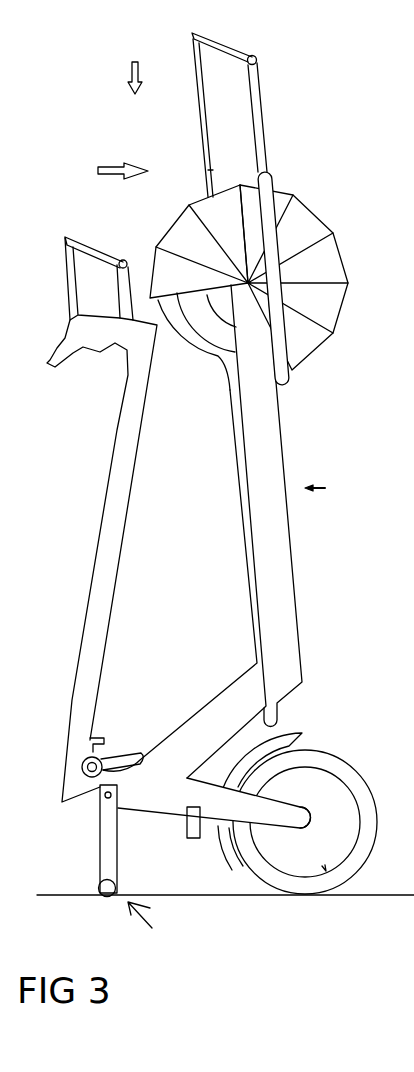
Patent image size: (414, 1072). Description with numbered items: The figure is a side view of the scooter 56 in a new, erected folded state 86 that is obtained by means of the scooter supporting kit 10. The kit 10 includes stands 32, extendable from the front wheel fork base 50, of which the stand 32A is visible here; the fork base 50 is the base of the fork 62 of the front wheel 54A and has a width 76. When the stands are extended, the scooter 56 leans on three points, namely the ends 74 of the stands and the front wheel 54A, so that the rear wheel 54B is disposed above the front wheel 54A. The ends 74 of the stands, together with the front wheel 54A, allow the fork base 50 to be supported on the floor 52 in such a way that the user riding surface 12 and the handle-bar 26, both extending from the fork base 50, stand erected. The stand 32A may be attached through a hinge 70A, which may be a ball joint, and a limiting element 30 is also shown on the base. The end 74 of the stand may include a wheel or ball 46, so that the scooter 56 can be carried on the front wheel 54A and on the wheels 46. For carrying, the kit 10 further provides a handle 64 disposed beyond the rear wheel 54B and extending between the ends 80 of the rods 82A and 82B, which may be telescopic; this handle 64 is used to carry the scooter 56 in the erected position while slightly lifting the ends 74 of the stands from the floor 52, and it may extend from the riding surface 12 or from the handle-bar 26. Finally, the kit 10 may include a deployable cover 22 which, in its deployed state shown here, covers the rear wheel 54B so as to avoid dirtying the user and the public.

The scooter supporting kit 10 is at (119, 555).
The riding surface 12 is at (247, 490).
The deployable cover 22 is at (297, 232).
The handle-bar 26 is at (90, 675).
The limiting element 30 is at (192, 837).
The stands 32 is at (404, 620).
The stand 32A is at (115, 858).
The wheel 46 is at (107, 897).
The front wheel fork base 50 is at (170, 793).
The floor 52 is at (376, 895).
The front wheel 54A is at (325, 792).
The rear wheel 54B is at (213, 323).
The scooter 56 is at (332, 490).
The fork 62 is at (302, 815).
The handle 64 is at (230, 47).
The hinge 70A is at (107, 795).
The end of stand 74 is at (100, 877).
The width of fork base 76 is at (407, 580).
The end of telescopic rod 80 is at (260, 79).
The telescopic rod 82A is at (260, 125).
The telescopic rod 82B is at (205, 133).
The erected folded state 86 is at (133, 65).